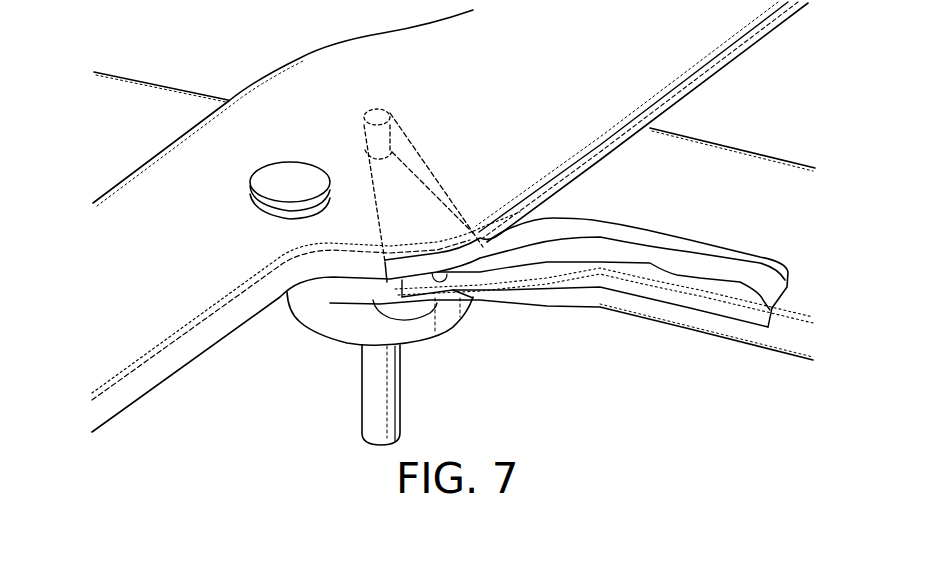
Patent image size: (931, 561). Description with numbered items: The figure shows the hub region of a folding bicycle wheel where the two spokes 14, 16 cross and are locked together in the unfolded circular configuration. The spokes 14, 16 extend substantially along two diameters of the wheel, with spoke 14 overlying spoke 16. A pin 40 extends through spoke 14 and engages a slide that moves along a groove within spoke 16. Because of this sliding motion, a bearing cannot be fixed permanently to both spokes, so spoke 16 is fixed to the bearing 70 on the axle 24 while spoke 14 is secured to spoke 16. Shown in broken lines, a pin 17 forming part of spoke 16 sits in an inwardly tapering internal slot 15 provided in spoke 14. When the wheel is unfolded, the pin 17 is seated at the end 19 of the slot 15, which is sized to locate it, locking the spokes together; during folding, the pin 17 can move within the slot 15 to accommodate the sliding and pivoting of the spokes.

The spoke 14 is at (180, 318).
The inwardly tapering internal slot 15 is at (437, 173).
The spoke 16 is at (725, 152).
The pin 17 is at (377, 108).
The end of the slot 19 is at (392, 152).
The axle 24 is at (362, 412).
The pin 40 is at (290, 172).
The bearing 70 is at (325, 327).